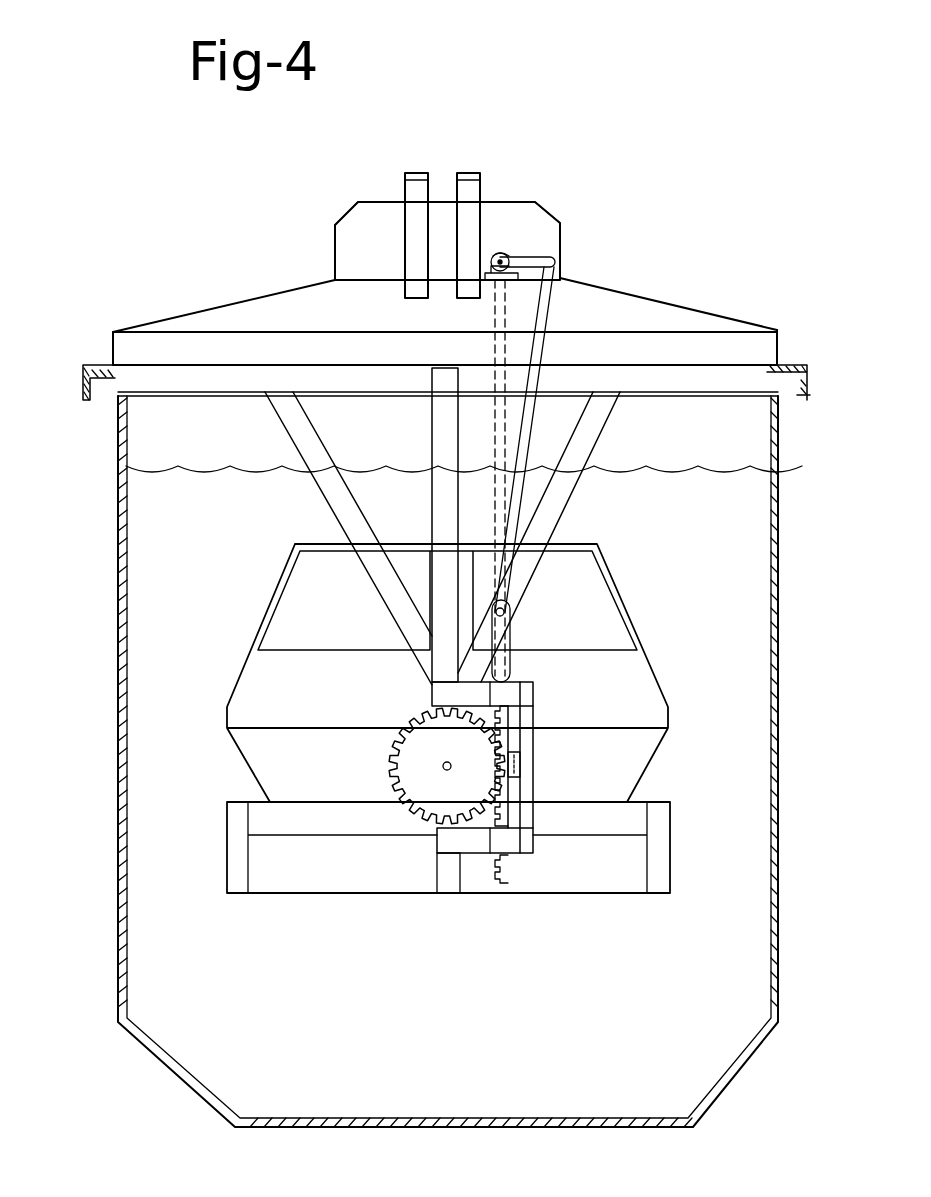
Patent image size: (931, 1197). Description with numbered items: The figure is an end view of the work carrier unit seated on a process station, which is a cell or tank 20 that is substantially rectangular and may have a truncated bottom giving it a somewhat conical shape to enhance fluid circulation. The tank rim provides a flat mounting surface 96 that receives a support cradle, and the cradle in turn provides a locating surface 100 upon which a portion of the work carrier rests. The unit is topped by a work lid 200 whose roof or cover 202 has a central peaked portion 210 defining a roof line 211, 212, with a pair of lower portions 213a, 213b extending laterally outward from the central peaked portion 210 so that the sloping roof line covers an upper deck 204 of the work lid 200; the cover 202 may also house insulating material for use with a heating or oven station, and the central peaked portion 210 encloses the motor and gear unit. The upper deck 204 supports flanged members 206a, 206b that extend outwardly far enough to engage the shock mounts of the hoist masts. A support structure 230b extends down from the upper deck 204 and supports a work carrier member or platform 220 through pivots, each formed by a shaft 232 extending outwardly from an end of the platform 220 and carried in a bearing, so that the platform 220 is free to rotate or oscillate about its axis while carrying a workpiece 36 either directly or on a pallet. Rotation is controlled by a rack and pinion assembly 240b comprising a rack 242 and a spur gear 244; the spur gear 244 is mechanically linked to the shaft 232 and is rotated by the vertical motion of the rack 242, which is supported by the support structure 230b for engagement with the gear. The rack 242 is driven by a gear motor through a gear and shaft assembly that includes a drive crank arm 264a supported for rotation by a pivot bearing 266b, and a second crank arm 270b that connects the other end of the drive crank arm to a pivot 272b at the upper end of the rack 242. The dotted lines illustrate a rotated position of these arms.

The tank 20 is at (100, 957).
The workpiece 36 is at (237, 678).
The flat mounting surface 96 is at (808, 387).
The locating surface 100 is at (102, 366).
The work lid 200 is at (457, 318).
The roof or cover 202 is at (268, 313).
The upper deck 204 is at (752, 350).
The flanged member 206a is at (412, 170).
The flanged member 206b is at (468, 170).
The central peaked portion 210 is at (385, 252).
The roof line 211 is at (347, 200).
The roof line 212 is at (560, 222).
The lower portion 213a is at (322, 297).
The lower portion 213b is at (658, 300).
The support structure 230b is at (557, 488).
The rack and pinion assembly 240b is at (432, 693).
The rack 242 is at (507, 787).
The spur gear 244 is at (458, 788).
The shaft 232 is at (443, 770).
The drive crank arm 264a is at (533, 258).
The pivot bearing 266b is at (492, 246).
The second crank arm 270b is at (530, 410).
The pivot 272b is at (510, 615).
The platform 220 is at (237, 870).